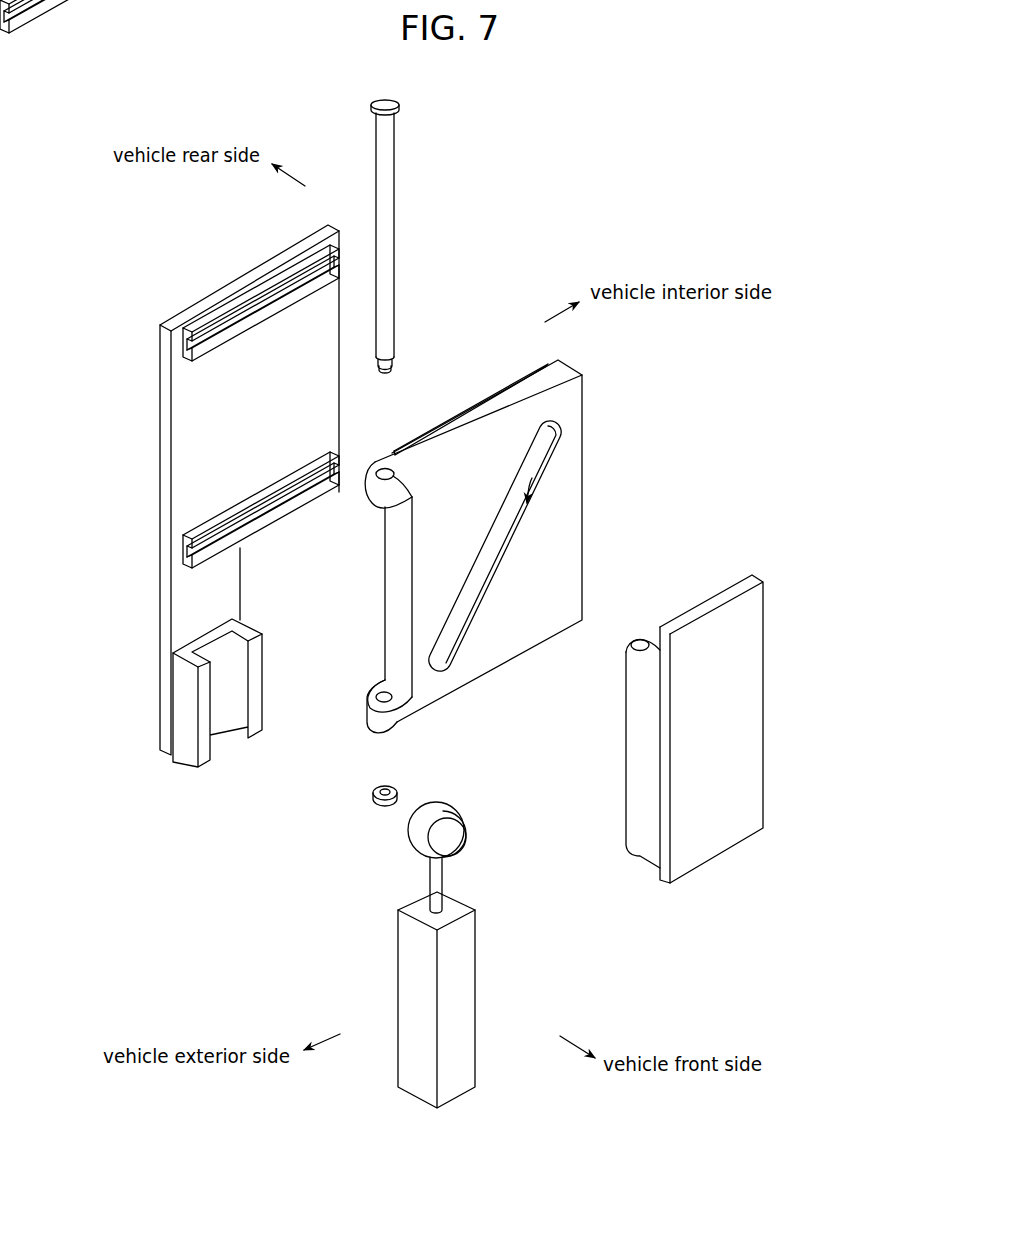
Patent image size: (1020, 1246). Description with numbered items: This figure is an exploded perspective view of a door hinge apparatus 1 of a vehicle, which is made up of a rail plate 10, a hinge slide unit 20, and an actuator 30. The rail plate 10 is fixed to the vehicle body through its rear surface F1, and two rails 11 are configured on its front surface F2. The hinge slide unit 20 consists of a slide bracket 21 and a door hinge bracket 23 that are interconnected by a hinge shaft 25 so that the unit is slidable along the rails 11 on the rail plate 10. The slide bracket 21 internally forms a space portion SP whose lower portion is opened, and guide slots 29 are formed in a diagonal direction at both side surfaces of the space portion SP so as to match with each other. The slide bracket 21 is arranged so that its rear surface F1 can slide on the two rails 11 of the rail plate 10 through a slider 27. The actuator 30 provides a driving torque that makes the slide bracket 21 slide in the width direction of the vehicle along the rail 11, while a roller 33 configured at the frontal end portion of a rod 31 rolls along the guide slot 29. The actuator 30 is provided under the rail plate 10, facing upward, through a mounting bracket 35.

The door hinge apparatus 1 is at (660, 160).
The rail plate 10 is at (183, 427).
The rails 11 is at (208, 320).
The hinge slide unit 20 is at (713, 478).
The slide bracket 21 is at (545, 540).
The door hinge bracket 23 is at (752, 578).
The hinge shaft 25 is at (388, 190).
The slider 27 is at (497, 393).
The guide slot 29 is at (532, 478).
The actuator 30 is at (462, 997).
The rod 31 is at (442, 877).
The roller 33 is at (462, 840).
The mounting bracket 35 is at (183, 752).
The space portion SP is at (550, 456).
The rear surface F1 is at (156, 378).
The front surface F2 is at (324, 406).